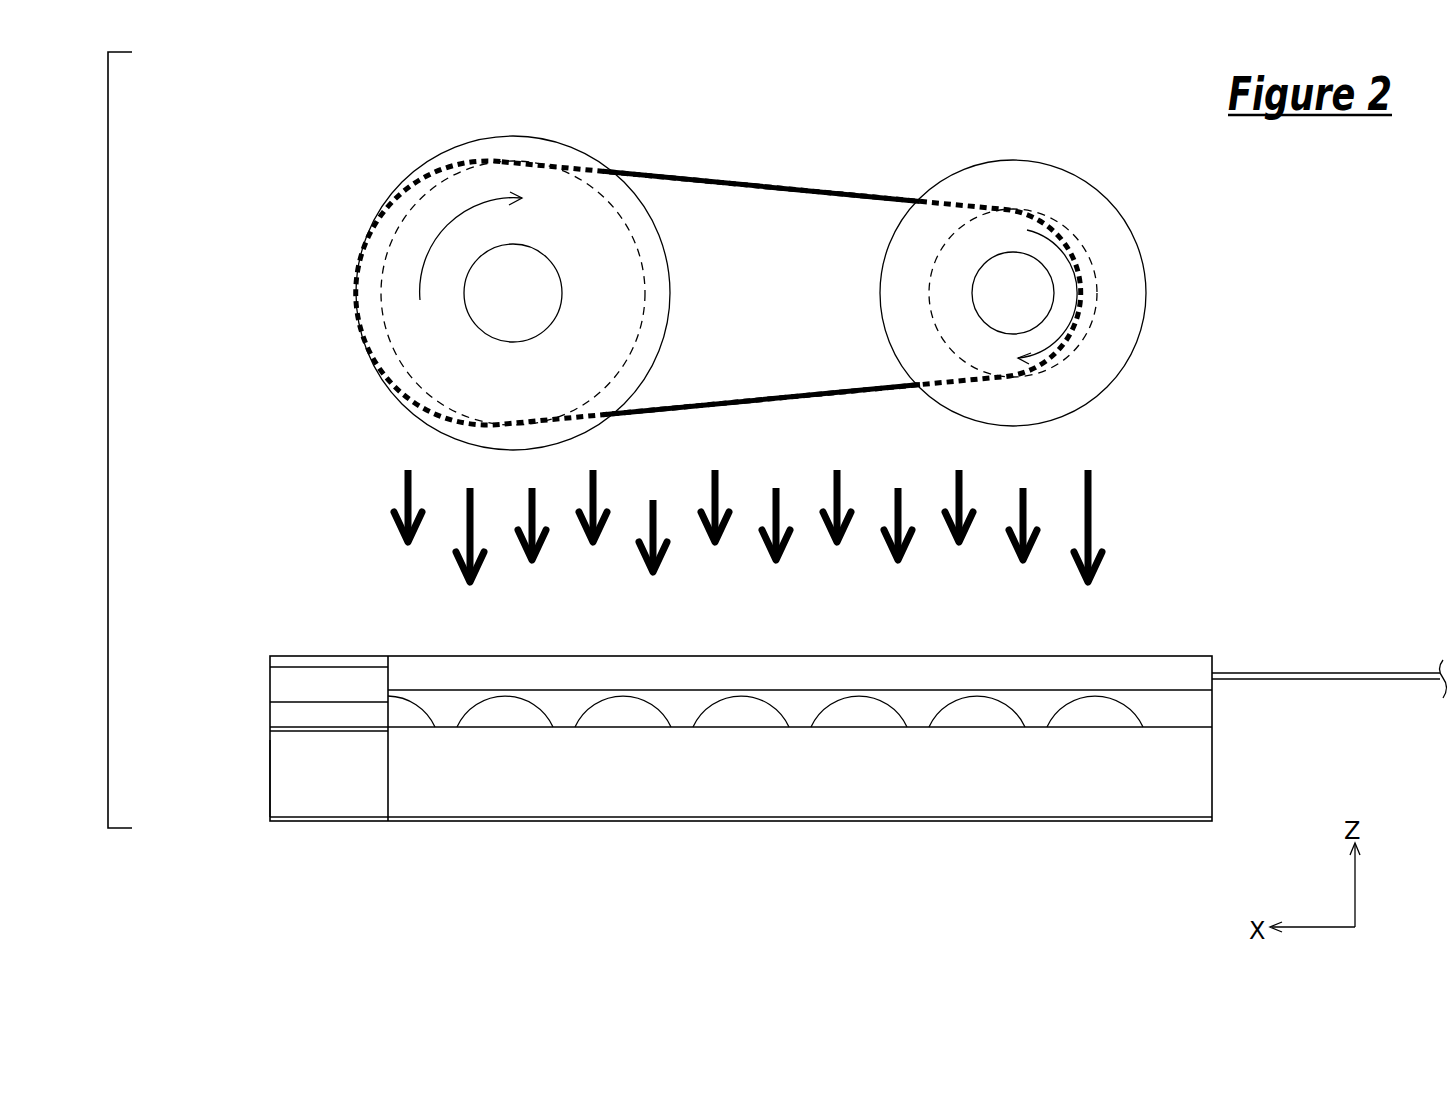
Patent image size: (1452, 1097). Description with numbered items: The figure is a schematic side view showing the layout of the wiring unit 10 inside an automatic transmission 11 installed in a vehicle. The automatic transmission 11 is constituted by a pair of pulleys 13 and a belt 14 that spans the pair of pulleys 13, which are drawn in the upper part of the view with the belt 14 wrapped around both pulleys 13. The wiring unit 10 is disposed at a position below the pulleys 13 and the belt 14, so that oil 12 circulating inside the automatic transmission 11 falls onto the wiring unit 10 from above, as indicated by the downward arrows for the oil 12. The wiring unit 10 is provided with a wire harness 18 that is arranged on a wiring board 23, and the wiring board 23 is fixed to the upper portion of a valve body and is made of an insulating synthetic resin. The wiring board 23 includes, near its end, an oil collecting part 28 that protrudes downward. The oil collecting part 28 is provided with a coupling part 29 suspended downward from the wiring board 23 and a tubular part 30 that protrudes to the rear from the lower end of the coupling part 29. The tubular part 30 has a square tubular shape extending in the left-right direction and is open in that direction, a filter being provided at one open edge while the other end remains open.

The wiring unit 10 is at (858, 656).
The automatic transmission 11 is at (103, 440).
The oil 12 is at (392, 488).
The pulleys 13 is at (513, 148).
The belt 14 is at (722, 180).
The wire harness 18 is at (1237, 673).
The wiring board 23 is at (1180, 662).
The oil collecting part 28 is at (671, 738).
The coupling part 29 is at (283, 682).
The tubular part 30 is at (233, 778).